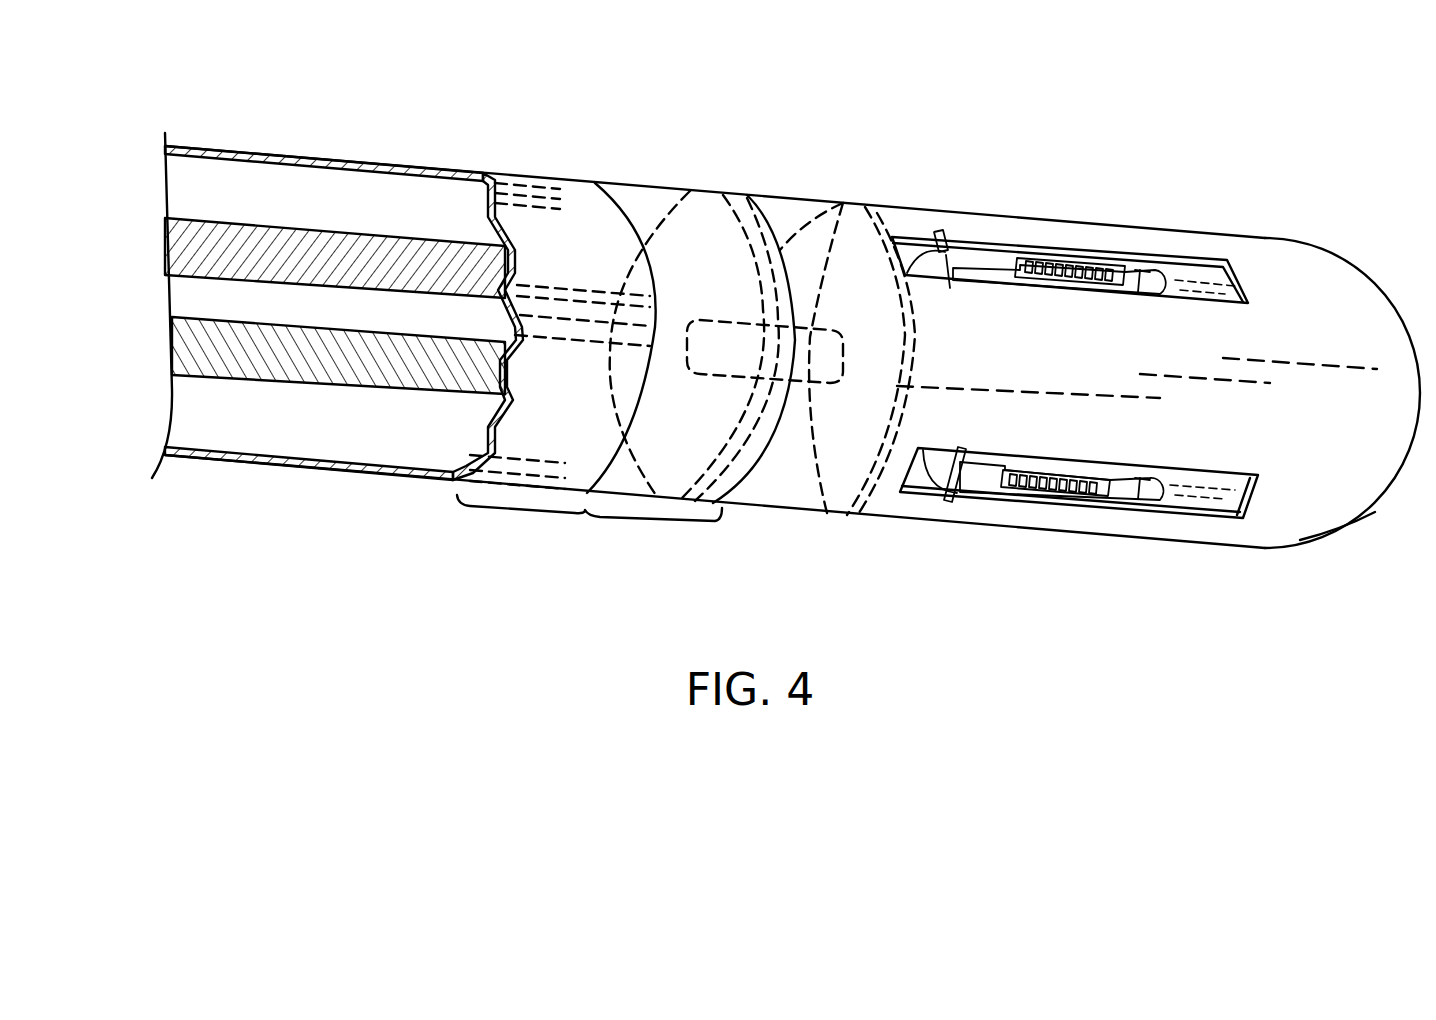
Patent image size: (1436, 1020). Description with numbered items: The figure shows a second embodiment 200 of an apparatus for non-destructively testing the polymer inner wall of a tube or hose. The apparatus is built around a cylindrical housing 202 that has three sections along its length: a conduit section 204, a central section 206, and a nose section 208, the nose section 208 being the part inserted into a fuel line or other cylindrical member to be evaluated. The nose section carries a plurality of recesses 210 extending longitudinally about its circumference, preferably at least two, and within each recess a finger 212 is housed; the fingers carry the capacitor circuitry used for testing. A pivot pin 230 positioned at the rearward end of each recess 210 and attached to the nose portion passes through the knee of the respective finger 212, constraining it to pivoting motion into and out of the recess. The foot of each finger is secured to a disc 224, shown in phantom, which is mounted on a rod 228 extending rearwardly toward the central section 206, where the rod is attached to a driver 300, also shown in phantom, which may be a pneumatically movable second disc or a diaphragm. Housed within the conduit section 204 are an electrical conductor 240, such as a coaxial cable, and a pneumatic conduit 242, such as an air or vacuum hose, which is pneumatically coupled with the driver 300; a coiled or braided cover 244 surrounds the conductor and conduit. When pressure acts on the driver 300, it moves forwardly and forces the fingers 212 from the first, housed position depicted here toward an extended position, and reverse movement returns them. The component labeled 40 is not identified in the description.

The second embodiment of the test apparatus 200 is at (518, 128).
The cylindrical housing 202 is at (1305, 258).
The conduit section 204 is at (412, 165).
The central section 206 is at (587, 520).
The nose section 208 is at (1352, 483).
The recesses 210 is at (1212, 263).
The fingers 212 is at (1153, 268).
The disc 224 is at (822, 505).
The rod 228 is at (843, 203).
The pivot pin 230 is at (950, 262).
The electrical conductor 240 is at (437, 398).
The pneumatic conduit 242 is at (265, 250).
The coiled or braided cover 244 is at (350, 478).
The driver 300 is at (718, 193).
The electronic module 40 is at (1059, 262).